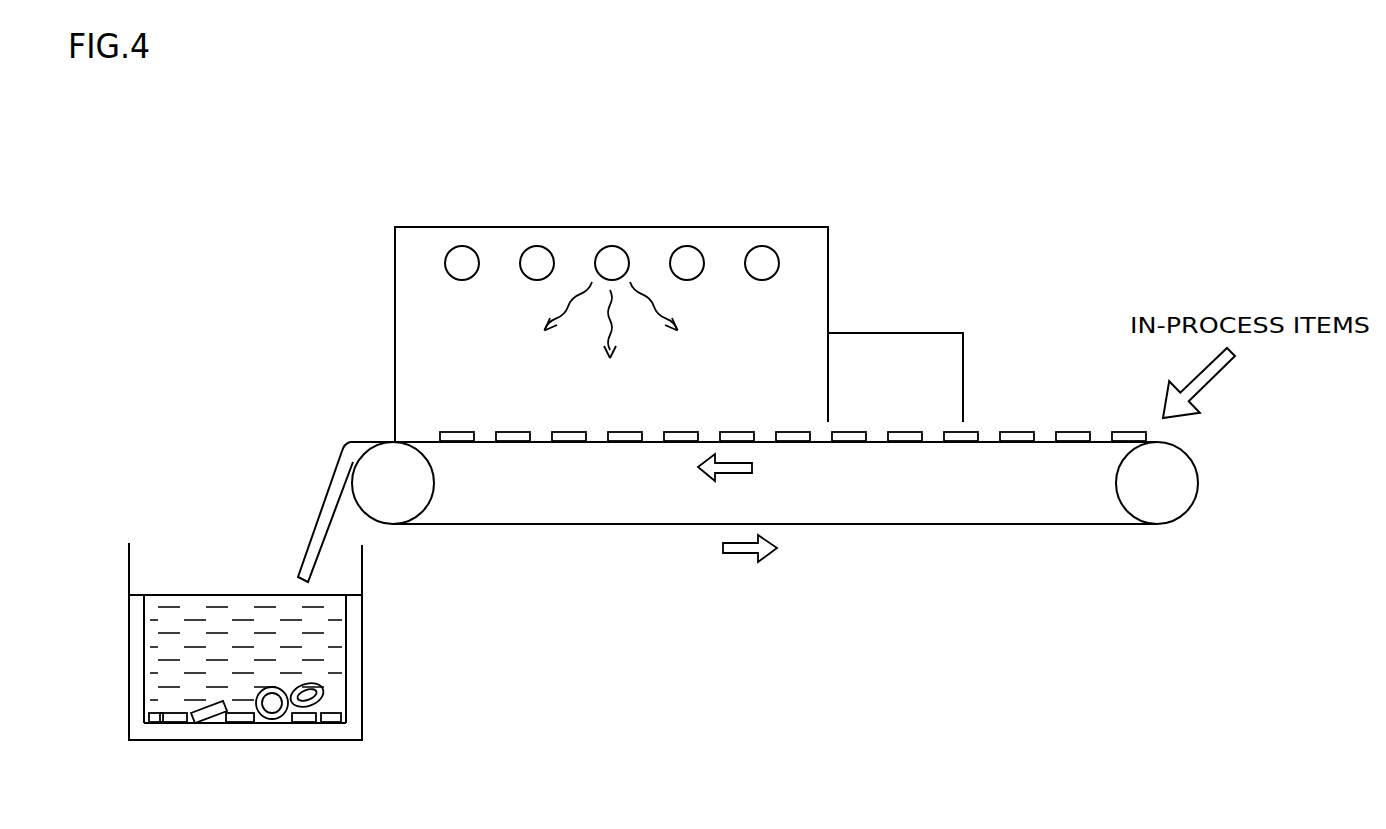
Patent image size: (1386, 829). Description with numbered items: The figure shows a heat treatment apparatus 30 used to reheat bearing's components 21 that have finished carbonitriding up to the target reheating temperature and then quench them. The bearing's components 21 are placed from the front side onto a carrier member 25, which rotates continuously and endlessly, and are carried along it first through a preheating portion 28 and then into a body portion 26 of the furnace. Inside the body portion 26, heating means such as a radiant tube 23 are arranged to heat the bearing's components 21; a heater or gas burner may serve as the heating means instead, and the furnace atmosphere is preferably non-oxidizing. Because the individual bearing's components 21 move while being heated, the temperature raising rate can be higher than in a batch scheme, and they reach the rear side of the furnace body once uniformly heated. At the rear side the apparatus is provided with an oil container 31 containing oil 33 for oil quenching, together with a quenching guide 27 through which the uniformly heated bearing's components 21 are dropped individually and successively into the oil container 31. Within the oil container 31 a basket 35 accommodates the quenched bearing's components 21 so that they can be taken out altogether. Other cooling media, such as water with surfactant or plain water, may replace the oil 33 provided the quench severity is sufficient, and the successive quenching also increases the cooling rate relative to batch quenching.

The heat treatment apparatus 30 is at (664, 193).
The body portion 26 is at (498, 330).
The radiant tube 23 is at (762, 262).
The preheating portion 28 is at (895, 357).
The carrier member 25 is at (935, 526).
The bearing's components 21 is at (1018, 435).
The quenching guide 27 is at (333, 510).
The oil container 31 is at (129, 566).
The oil 33 is at (333, 652).
The basket 35 is at (333, 727).